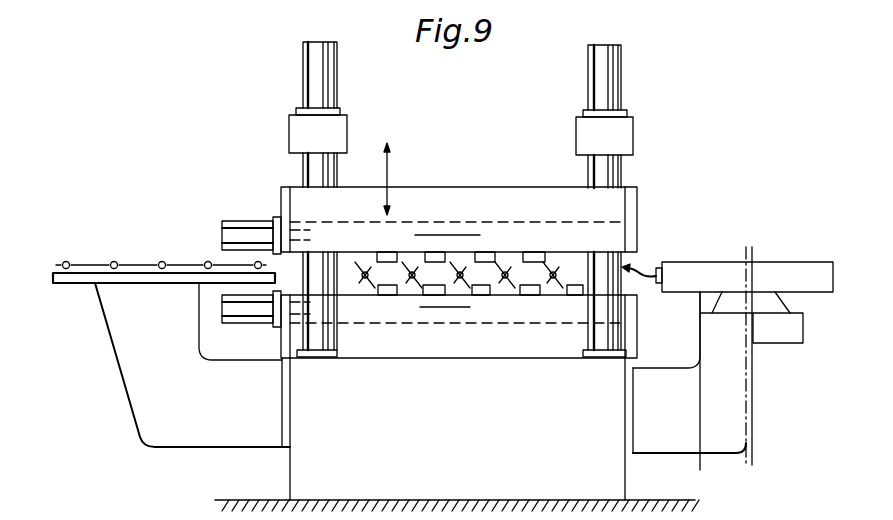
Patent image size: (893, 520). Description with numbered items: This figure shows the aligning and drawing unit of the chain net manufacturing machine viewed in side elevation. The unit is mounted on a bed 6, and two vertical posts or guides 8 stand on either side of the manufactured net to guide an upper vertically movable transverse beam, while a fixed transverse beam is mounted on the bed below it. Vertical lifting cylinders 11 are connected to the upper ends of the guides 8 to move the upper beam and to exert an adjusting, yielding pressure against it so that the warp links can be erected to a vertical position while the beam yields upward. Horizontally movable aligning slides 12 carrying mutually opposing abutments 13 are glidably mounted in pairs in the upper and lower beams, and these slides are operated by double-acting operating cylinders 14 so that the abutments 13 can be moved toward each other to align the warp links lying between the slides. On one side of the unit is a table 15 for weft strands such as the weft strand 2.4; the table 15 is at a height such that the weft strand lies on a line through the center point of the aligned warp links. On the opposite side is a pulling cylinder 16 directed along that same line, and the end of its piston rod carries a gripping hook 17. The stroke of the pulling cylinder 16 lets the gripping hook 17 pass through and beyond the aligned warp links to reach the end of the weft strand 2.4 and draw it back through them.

The weft strand 2.4 is at (146, 262).
The bed 6 is at (466, 449).
The posts or guides 8 is at (308, 163).
The vertical lifting cylinders 11 is at (310, 63).
The aligning slides 12 is at (450, 218).
The abutments 13 is at (489, 252).
The double-acting operating cylinders 14 is at (228, 222).
The table 15 is at (118, 285).
The pulling cylinder 16 is at (772, 262).
The gripping hook 17 is at (644, 272).